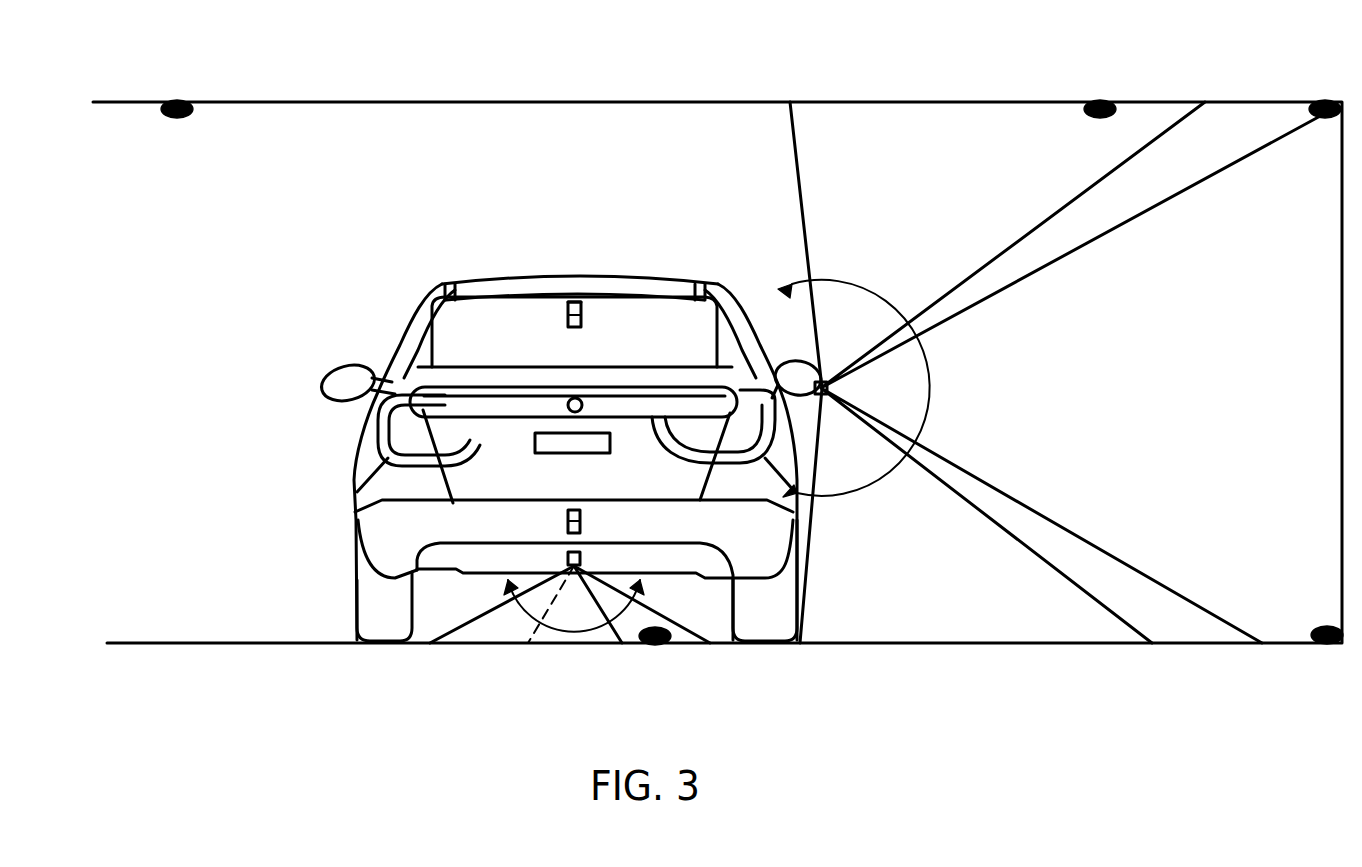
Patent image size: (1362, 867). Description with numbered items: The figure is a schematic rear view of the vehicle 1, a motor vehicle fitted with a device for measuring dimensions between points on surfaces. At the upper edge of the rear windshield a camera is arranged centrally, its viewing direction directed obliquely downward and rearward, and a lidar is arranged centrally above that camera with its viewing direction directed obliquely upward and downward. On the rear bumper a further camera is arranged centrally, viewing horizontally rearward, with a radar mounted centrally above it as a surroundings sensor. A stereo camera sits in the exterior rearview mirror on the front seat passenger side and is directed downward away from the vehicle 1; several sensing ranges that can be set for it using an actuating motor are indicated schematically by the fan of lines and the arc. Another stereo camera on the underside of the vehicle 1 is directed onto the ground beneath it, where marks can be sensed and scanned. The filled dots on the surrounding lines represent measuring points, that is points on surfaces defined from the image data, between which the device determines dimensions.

The vehicle 1 is at (355, 513).